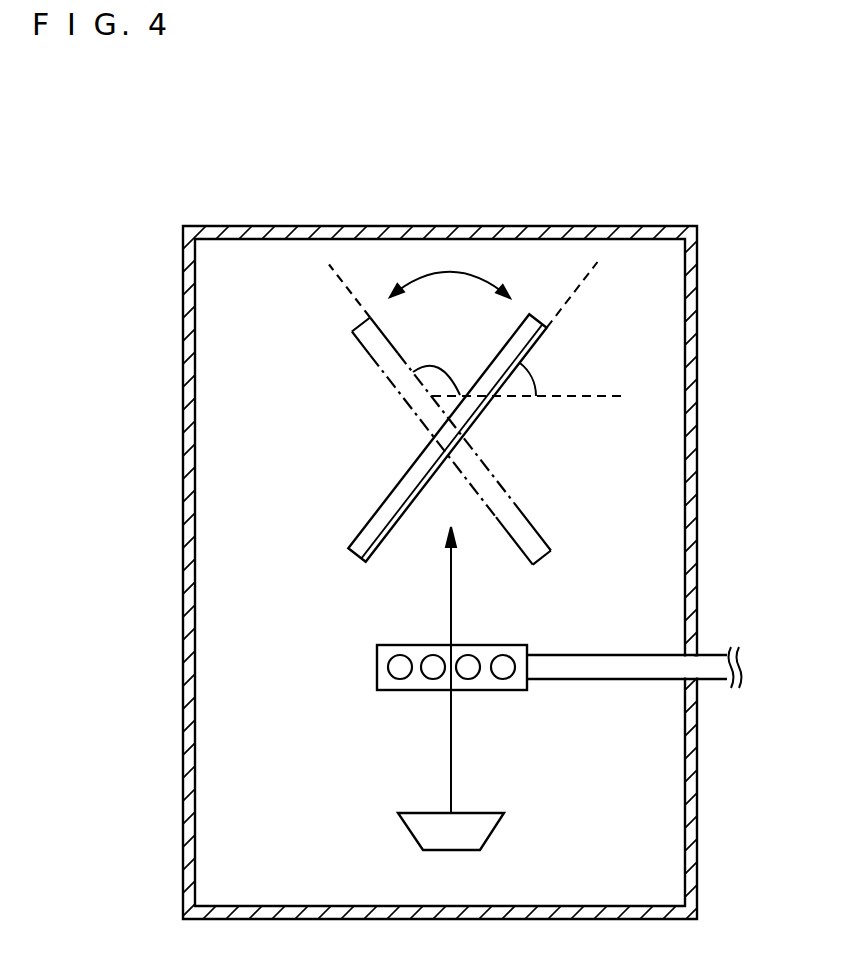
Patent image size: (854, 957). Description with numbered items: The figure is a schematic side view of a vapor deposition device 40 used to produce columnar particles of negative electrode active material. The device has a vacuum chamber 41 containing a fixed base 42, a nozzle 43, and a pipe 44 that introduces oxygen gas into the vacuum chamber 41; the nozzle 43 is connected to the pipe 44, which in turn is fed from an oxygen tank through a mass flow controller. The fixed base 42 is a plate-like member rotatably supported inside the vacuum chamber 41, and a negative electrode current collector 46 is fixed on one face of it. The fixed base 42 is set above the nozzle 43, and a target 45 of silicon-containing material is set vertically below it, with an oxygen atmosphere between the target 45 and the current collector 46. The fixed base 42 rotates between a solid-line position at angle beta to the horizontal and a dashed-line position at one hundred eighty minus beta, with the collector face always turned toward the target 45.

The vapor deposition device 40 is at (453, 173).
The vacuum chamber 41 is at (688, 267).
The fixed base 42 is at (530, 316).
The nozzle 43 is at (475, 692).
The pipe 44 is at (628, 670).
The target 45 is at (477, 840).
The negative electrode current collector 46 is at (362, 558).